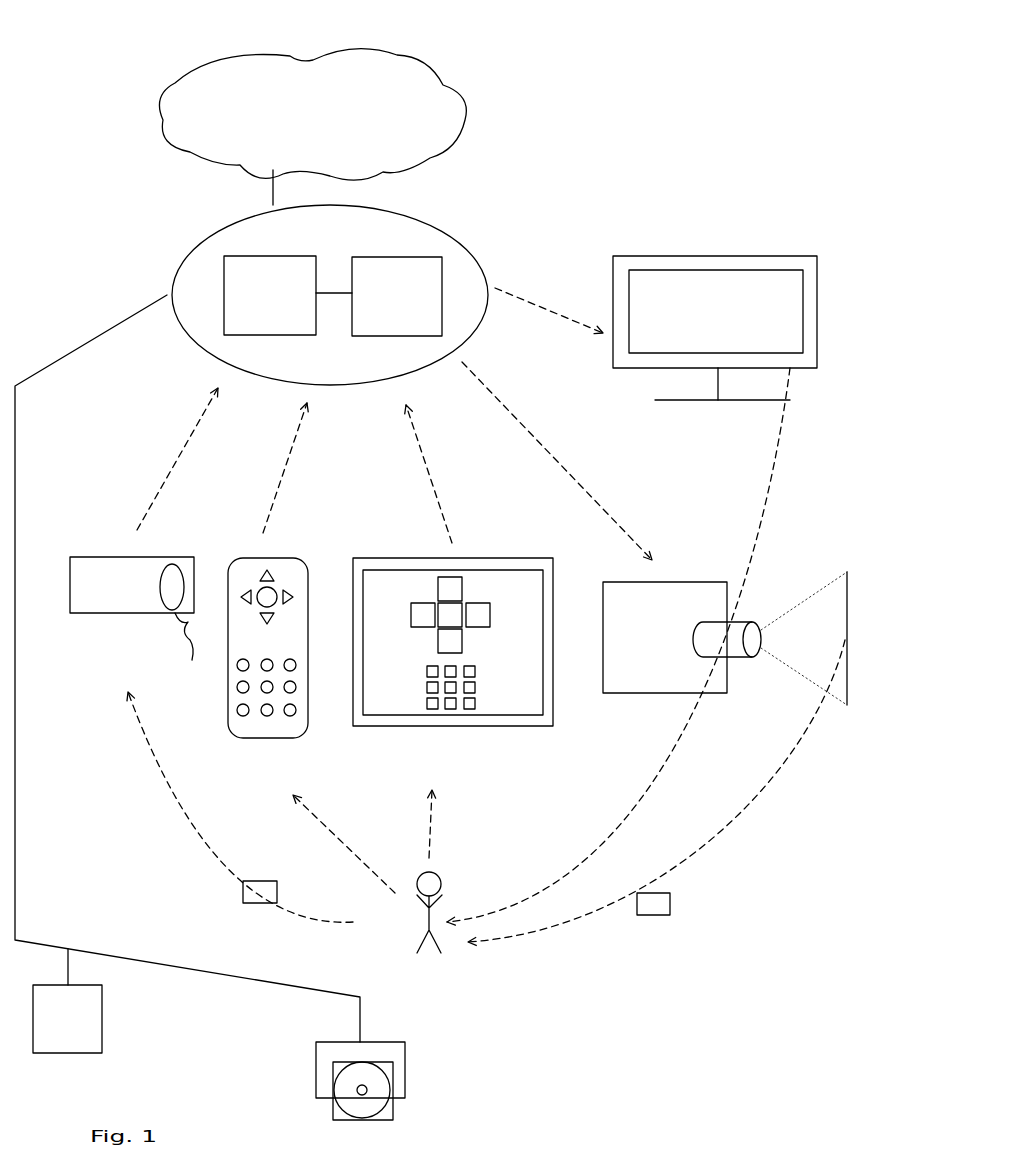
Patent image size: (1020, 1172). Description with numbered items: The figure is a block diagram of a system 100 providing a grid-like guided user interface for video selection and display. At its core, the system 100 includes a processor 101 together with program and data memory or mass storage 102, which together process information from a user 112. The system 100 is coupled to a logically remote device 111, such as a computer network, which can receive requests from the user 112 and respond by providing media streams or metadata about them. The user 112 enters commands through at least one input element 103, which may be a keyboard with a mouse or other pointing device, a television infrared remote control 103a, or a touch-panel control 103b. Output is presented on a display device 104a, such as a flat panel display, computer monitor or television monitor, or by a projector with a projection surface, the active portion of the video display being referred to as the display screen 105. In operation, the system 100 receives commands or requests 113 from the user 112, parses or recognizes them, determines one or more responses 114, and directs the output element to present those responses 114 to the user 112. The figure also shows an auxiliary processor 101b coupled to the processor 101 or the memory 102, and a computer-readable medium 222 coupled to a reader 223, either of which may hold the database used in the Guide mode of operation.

The system 100 is at (680, 75).
The logically remote device 111 is at (312, 115).
The processor 101 is at (270, 284).
The program and data memory or mass storage 102 is at (397, 284).
The display device 104a is at (655, 717).
The display screen 105 is at (785, 717).
The input element 103 is at (92, 563).
The television infrared remote control 103a is at (238, 695).
The touch-panel control 103b is at (520, 693).
The user 112 is at (372, 901).
The commands or requests 113 is at (262, 907).
The responses 114 is at (650, 915).
The auxiliary processor 101b is at (67, 1001).
The reader 223 is at (390, 1053).
The computer-readable medium 222 is at (375, 1105).